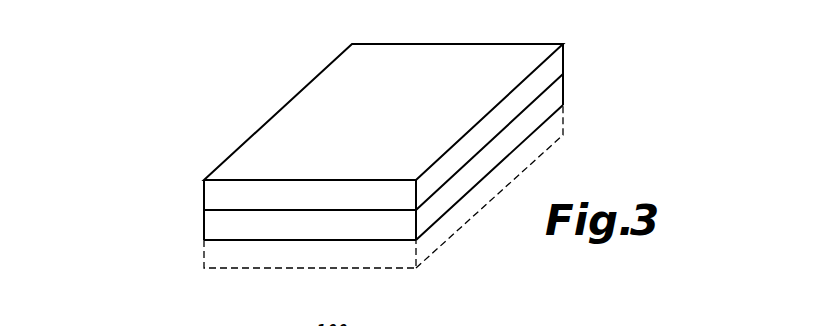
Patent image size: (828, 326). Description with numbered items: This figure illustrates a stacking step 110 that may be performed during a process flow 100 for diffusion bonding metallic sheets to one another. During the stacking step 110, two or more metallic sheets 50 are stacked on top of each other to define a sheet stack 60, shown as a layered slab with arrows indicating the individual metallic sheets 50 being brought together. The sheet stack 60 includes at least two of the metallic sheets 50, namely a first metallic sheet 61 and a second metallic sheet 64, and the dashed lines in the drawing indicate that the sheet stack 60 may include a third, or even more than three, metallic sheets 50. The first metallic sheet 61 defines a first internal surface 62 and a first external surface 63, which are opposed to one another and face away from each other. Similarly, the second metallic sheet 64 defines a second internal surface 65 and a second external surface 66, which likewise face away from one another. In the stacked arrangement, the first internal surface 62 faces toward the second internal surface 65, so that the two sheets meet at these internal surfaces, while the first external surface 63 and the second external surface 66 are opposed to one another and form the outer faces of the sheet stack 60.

The metallic sheets 50 is at (205, 193).
The sheet stack 60 is at (152, 142).
The first metallic sheet 61 is at (567, 62).
The first internal surface 62 is at (282, 210).
The first external surface 63 is at (320, 117).
The second metallic sheet 64 is at (565, 90).
The second internal surface 65 is at (343, 208).
The second external surface 66 is at (378, 240).
The process flow 100 is at (664, 71).
The stacking step 110 is at (668, 101).